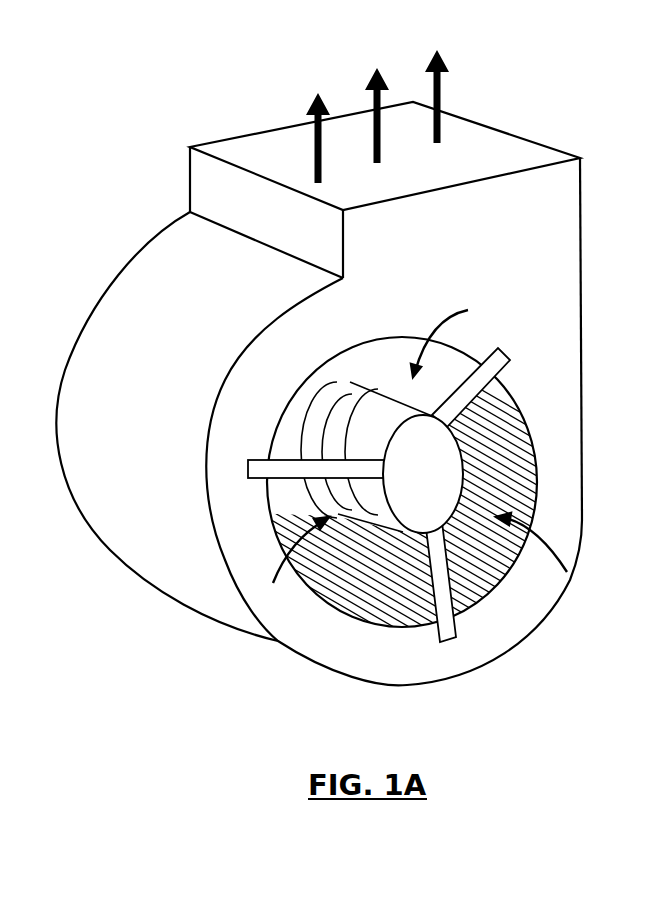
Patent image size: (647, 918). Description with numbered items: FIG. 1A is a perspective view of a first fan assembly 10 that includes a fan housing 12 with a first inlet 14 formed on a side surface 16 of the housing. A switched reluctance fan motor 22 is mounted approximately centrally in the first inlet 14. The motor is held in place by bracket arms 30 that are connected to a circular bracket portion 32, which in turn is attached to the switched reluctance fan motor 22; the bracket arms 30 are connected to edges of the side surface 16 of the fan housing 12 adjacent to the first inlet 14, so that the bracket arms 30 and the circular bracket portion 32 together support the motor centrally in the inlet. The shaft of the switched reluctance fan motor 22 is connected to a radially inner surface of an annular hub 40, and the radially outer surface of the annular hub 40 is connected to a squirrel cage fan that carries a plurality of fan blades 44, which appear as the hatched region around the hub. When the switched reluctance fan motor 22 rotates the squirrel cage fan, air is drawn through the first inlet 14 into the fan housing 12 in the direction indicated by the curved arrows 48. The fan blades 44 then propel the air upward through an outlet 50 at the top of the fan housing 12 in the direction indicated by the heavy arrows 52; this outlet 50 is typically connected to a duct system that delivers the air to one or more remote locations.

The first fan assembly 10 is at (339, 449).
The fan housing 12 is at (319, 386).
The first inlet 14 is at (336, 355).
The side surface 16 is at (265, 359).
The switched reluctance fan motor 22 is at (413, 483).
The bracket arms 30 is at (249, 465).
The circular bracket portion 32 is at (340, 413).
The annular hub 40 is at (414, 549).
The fan blades 44 is at (477, 575).
The arrows 48 is at (448, 318).
The outlet 50 is at (482, 120).
The arrows 52 is at (314, 158).